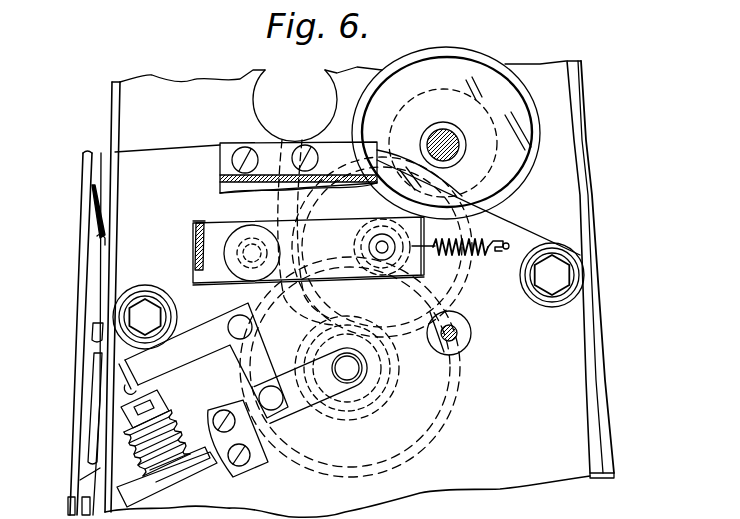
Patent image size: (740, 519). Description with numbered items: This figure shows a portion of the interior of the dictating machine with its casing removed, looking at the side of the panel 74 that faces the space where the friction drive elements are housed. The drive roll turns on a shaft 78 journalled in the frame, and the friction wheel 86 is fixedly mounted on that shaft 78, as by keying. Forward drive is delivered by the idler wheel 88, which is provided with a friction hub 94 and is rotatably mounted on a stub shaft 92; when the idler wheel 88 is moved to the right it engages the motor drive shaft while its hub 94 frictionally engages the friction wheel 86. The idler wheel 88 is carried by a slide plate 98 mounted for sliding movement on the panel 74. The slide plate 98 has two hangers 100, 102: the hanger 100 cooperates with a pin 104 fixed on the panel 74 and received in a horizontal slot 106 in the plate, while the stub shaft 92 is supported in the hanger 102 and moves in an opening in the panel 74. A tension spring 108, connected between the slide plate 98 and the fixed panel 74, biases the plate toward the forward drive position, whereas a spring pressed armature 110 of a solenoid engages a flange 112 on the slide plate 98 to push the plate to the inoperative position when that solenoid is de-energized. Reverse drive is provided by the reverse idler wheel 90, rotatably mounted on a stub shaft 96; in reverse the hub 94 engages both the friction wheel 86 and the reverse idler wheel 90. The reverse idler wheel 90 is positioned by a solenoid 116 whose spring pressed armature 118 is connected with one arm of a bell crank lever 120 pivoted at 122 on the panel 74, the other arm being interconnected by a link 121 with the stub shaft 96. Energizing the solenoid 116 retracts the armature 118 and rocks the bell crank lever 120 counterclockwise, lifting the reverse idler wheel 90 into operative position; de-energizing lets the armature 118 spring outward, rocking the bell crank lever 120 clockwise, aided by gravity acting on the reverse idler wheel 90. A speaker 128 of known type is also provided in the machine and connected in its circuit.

The panel 74 is at (572, 345).
The shaft 78 is at (440, 130).
The friction wheel 86 is at (533, 110).
The idler wheel 88 is at (463, 302).
The reverse idler wheel 90 is at (440, 404).
The stub shaft 92 is at (372, 240).
The friction hub 94 is at (415, 278).
The stub shaft 96 is at (350, 376).
The slide plate 98 is at (213, 227).
The hanger 100 is at (250, 230).
The hanger 102 is at (375, 248).
The pin 104 is at (264, 210).
The horizontal slot 106 is at (228, 286).
The tension spring 108 is at (503, 224).
The spring pressed armature 110 is at (193, 227).
The flange 112 is at (195, 243).
The solenoid 116 is at (245, 493).
The spring pressed armature 118 is at (162, 415).
The bell crank lever 120 is at (190, 357).
The link 121 is at (308, 398).
The pivot 122 is at (243, 327).
The speaker 128 is at (76, 232).